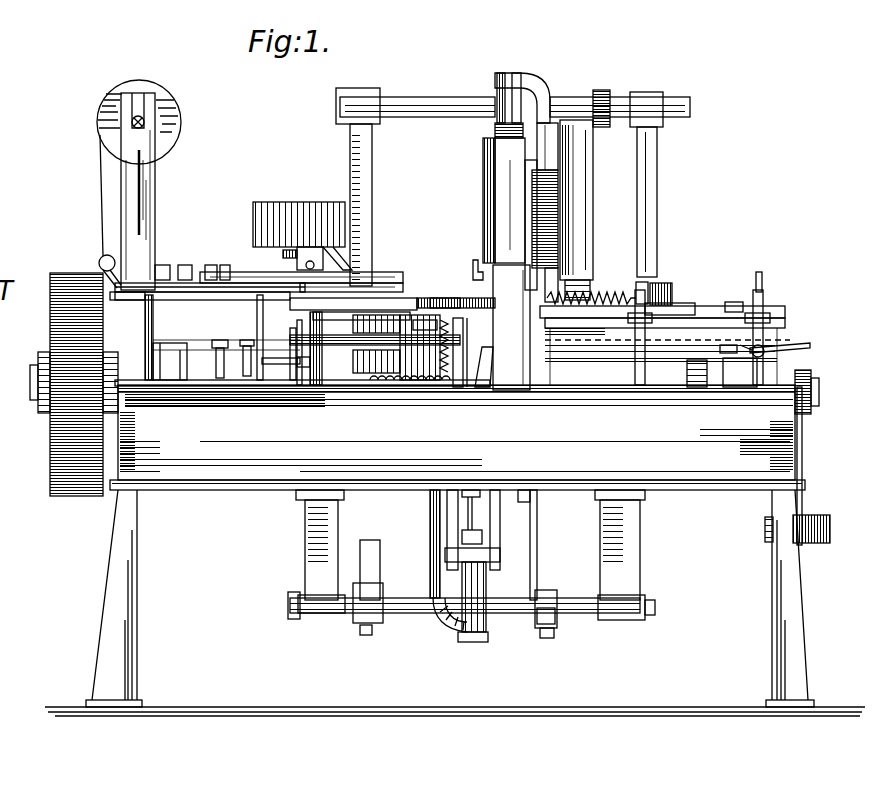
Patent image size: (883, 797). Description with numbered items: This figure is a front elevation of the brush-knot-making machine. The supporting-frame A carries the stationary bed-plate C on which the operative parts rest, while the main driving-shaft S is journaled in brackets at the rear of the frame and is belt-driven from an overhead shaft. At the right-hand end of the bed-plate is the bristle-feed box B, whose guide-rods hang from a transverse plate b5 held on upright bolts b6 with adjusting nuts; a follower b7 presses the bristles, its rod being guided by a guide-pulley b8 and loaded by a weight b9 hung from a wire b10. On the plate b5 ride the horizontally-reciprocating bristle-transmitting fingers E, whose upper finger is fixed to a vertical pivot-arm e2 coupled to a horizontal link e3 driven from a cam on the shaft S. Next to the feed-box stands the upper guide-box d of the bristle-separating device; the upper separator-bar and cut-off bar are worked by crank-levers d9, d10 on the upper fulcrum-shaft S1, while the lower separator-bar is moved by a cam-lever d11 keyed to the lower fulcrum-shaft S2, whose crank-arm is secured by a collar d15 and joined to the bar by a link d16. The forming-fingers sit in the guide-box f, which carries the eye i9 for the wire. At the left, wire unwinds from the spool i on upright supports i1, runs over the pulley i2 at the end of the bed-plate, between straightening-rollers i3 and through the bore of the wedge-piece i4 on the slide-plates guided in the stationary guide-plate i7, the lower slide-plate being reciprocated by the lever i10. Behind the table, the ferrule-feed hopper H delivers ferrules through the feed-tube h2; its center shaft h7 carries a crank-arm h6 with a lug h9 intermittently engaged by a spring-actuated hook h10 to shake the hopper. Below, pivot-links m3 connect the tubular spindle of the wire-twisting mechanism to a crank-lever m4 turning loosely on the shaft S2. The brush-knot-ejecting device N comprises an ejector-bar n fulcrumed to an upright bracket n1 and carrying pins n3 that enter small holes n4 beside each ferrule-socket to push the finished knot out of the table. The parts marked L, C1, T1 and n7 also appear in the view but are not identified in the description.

The supporting-frame A is at (747, 487).
The stationary bed-plate C is at (735, 393).
The main driving-shaft S is at (811, 389).
The spool i is at (114, 131).
The upright supports i1 is at (147, 207).
The pulley i2 is at (100, 267).
The rail L is at (197, 263).
The stationary guide-plate i7 is at (363, 290).
The straightening-rollers i3 is at (227, 260).
The wedge-piece i4 is at (283, 273).
The eye i9 is at (476, 274).
The ferrule-feed hopper H is at (270, 220).
The ferrule-feed tube h2 is at (340, 258).
The fulcrum-shaft S1 is at (447, 92).
The guide-box f is at (492, 210).
The carriage block C1 is at (517, 273).
The crank-lever d10 is at (575, 202).
The crank-lever d9 is at (573, 173).
The upper guide-box d is at (578, 236).
The bristle-transmitting fingers E is at (603, 300).
The vertical pivot-arm e2 is at (657, 290).
The horizontal link e3 is at (677, 303).
The bristle-feed box B is at (745, 347).
The upright bolts b6 is at (633, 387).
The transverse plate b5 is at (770, 300).
The follower b7 is at (822, 350).
The guide-pulley b8 is at (813, 347).
The wire b10 is at (798, 455).
The weight b9 is at (813, 543).
The lever i10 is at (157, 347).
The spring-actuated hook h10 is at (217, 352).
The lug h9 is at (245, 345).
The center shaft h7 is at (293, 347).
The crank-arm h6 is at (282, 360).
The rack T1 is at (403, 312).
The vertically-projecting pins n3 is at (443, 307).
The brush-knot-ejecting device N is at (390, 387).
The small holes n4 is at (397, 350).
The ejector-bar n is at (440, 323).
The upright bracket n1 is at (463, 347).
The plate n7 is at (485, 367).
The lower fulcrum-shaft S2 is at (583, 610).
The pivot-links m3 is at (493, 518).
The crank-lever m4 is at (478, 577).
The link d16 is at (530, 542).
The collar d15 is at (553, 598).
The intermediate cam-lever d11 is at (535, 617).